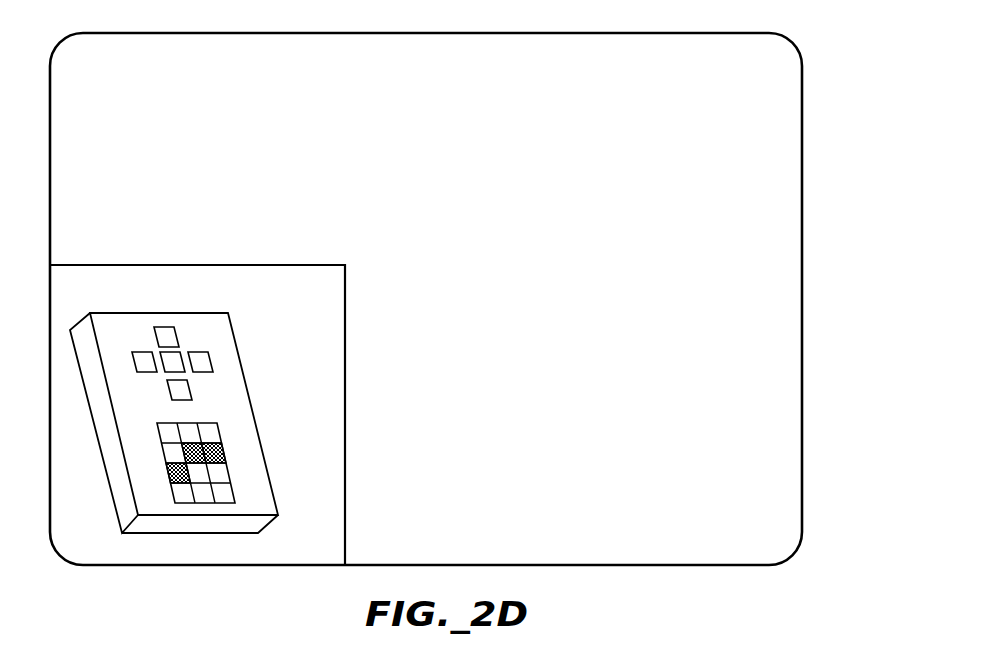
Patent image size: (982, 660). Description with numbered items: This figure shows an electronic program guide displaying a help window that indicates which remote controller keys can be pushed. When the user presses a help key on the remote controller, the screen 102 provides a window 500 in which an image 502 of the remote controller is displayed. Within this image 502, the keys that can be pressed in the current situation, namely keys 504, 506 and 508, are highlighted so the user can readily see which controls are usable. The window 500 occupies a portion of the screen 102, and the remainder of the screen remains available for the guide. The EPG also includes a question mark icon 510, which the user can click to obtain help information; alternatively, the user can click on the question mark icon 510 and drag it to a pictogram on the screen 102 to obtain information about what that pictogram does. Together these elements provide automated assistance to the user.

The screen 102 is at (672, 53).
The window 500 is at (323, 503).
The image of remote controller 502 is at (238, 543).
The key 504 is at (167, 473).
The key 506 is at (226, 457).
The key 508 is at (222, 450).
The question mark icon 510 is at (323, 294).